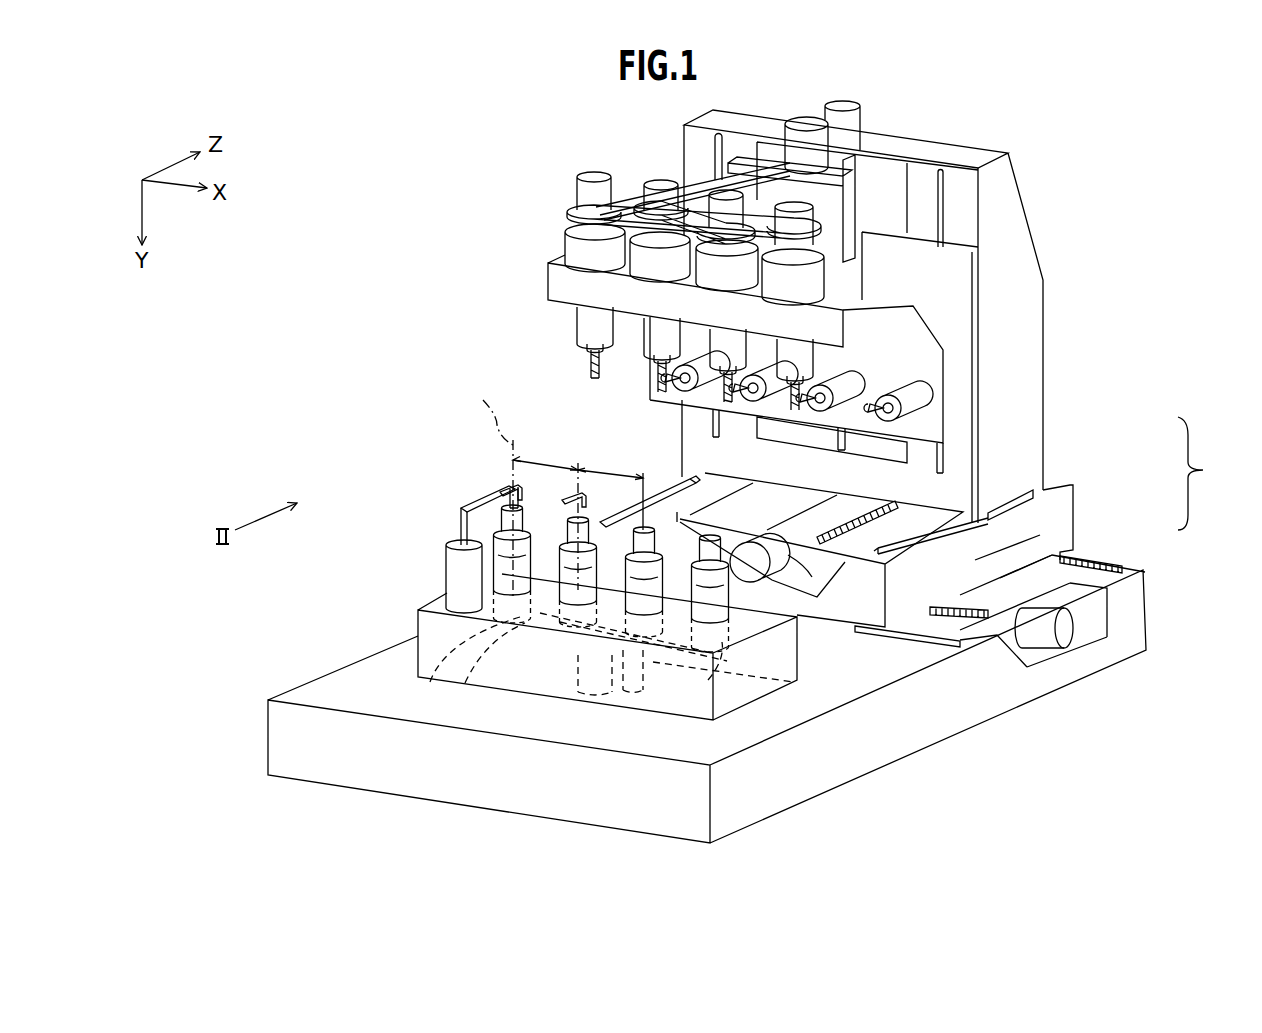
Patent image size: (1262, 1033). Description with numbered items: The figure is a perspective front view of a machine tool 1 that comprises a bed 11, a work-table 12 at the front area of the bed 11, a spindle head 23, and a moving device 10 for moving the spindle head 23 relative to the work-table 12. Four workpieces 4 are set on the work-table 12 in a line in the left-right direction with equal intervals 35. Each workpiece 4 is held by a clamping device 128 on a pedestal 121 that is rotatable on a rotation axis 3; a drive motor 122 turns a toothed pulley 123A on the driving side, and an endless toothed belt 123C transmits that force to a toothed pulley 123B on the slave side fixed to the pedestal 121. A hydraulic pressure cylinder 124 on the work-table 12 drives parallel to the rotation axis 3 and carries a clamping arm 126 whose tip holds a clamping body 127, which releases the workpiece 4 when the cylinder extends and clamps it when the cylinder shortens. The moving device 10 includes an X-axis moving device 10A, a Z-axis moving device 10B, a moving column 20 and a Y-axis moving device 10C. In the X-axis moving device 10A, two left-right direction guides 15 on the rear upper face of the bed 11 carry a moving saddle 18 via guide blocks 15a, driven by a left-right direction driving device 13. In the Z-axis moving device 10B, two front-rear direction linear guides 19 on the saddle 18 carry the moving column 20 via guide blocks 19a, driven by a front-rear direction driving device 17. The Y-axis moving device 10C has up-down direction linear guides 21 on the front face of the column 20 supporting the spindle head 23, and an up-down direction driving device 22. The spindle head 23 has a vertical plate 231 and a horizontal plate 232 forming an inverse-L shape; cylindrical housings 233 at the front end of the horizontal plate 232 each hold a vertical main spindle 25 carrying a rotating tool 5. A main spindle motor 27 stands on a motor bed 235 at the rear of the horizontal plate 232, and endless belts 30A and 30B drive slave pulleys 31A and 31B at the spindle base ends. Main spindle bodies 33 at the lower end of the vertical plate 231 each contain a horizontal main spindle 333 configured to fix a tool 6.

The machine tool 1 is at (1090, 127).
The rotation axis 3 is at (489, 414).
The workpiece 4 is at (520, 506).
The tool 5 is at (593, 366).
The tool 6 is at (685, 392).
The moving device 10 is at (1208, 473).
The X-axis moving device 10A is at (1093, 560).
The Z-axis moving device 10B is at (1062, 475).
The Y-axis moving device 10C is at (953, 462).
The bed 11 is at (858, 747).
The work-table 12 is at (612, 709).
The left-right direction driving device 13 is at (1062, 634).
The left-right direction guides 15 is at (1118, 557).
The guide blocks 15a is at (900, 645).
The front-rear direction driving device 17 is at (832, 592).
The left-right direction moving saddle 18 is at (980, 558).
The front-rear direction linear guides 19 is at (908, 558).
The guide blocks 19a is at (993, 513).
The moving column 20 is at (1047, 298).
The up-down direction linear guides 21 is at (718, 135).
The up-down direction driving device 22 is at (862, 114).
The spindle head 23 is at (540, 262).
The vertical main spindle 25 is at (576, 312).
The main spindle motor 27 is at (795, 118).
The endless belt 30A is at (812, 247).
The endless belt 30B is at (567, 207).
The slave pulley 31A is at (648, 192).
The slave pulley 31B is at (575, 197).
The main spindle body 33 is at (853, 410).
The interval 35 is at (552, 463).
The pedestal 121 is at (495, 568).
The drive motor 122 is at (613, 692).
The toothed pulley on driving side 123A is at (560, 680).
The toothed pulley on slave side 123B is at (430, 682).
The endless toothed belt 123C is at (465, 683).
The hydraulic pressure cylinder 124 is at (453, 588).
The clamping arm 126 is at (493, 500).
The clamping body 127 is at (511, 488).
The clamping device 128 is at (467, 533).
The vertical plate 231 is at (958, 424).
The horizontal plate 232 is at (952, 252).
The housing 233 is at (562, 245).
The motor bed 235 is at (842, 172).
The horizontal main spindle 333 is at (910, 393).